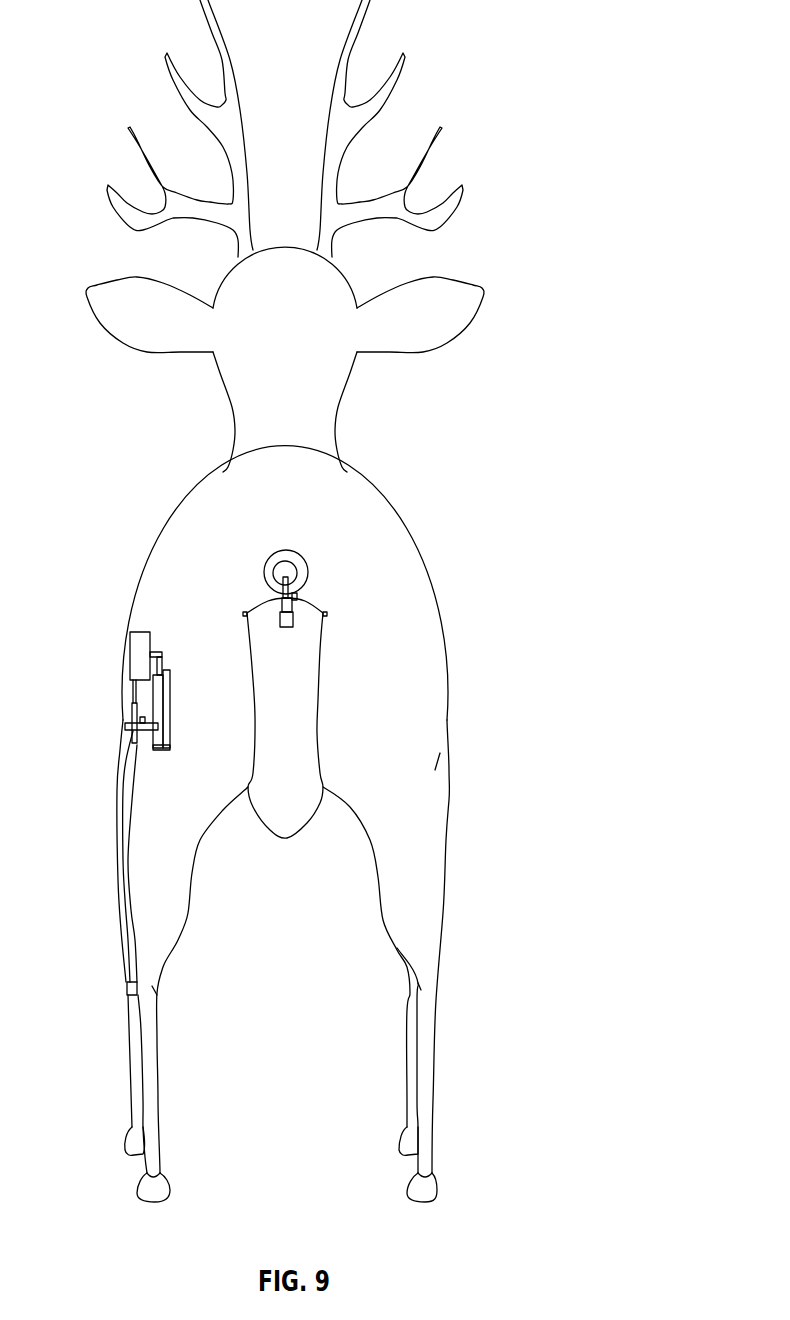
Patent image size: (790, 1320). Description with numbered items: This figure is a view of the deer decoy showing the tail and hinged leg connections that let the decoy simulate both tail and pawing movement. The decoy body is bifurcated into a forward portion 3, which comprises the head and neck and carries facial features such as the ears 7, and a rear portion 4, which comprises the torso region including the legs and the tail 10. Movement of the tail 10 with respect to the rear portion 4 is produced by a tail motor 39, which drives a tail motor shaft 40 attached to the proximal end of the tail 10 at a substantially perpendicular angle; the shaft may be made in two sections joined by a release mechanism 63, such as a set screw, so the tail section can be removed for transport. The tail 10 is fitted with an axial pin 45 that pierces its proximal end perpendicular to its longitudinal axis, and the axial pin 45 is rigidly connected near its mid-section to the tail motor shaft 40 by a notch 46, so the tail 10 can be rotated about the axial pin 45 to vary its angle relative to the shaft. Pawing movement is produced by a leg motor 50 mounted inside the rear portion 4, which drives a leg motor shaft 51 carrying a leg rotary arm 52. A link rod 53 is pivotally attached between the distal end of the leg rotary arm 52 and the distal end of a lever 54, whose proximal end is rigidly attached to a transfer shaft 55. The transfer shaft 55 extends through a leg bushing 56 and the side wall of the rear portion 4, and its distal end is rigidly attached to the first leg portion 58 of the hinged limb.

The forward portion 3 is at (292, 243).
The rear portion 4 is at (386, 497).
The ears 7 is at (105, 285).
The tail 10 is at (310, 710).
The tail motor 39 is at (280, 551).
The tail motor shaft 40 is at (268, 578).
The axial pin 45 is at (330, 613).
The notch 46 is at (293, 630).
The leg motor 50 is at (135, 630).
The leg motor shaft 51 is at (158, 650).
The leg rotary arm 52 is at (165, 668).
The link rod 53 is at (172, 708).
The lever 54 is at (130, 740).
The transfer shaft 55 is at (130, 710).
The leg bushing 56 is at (130, 678).
The first leg portion 58 is at (116, 830).
The release mechanism 63 is at (300, 592).